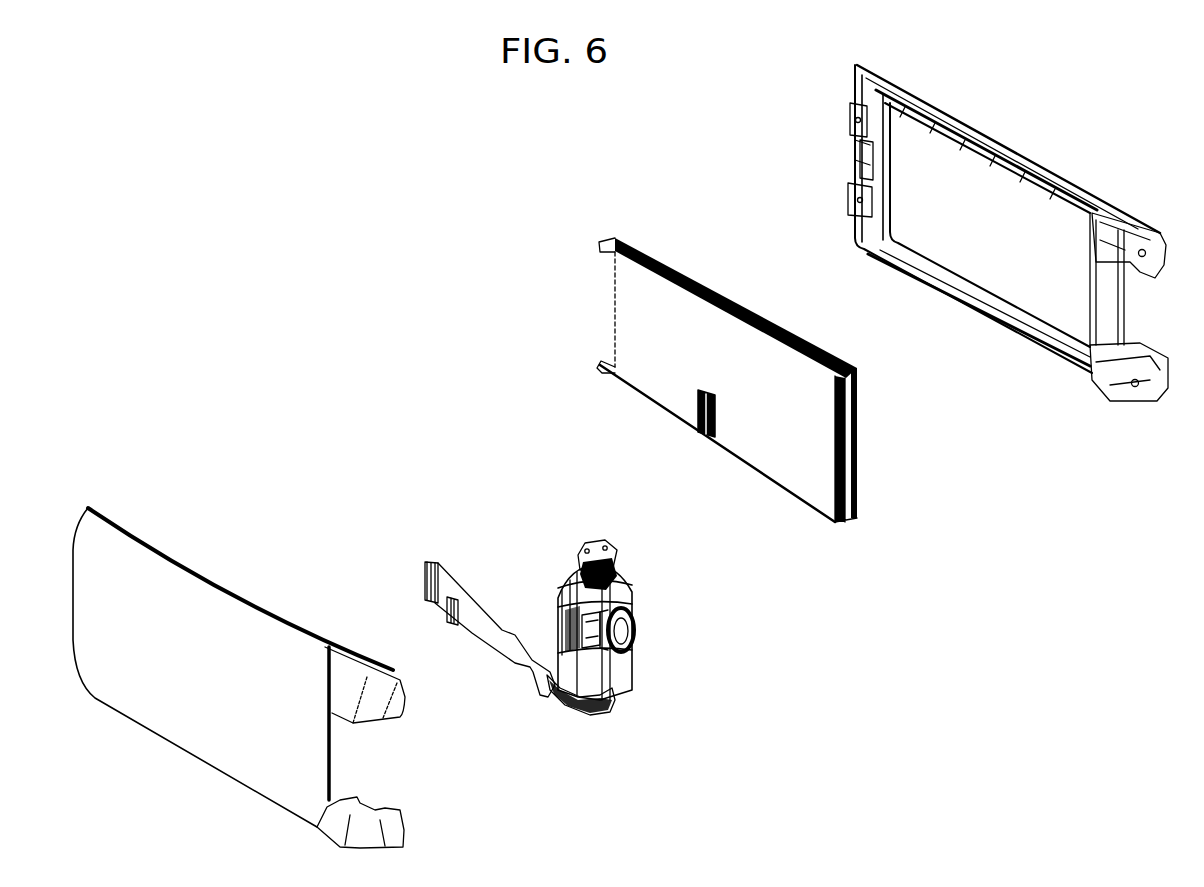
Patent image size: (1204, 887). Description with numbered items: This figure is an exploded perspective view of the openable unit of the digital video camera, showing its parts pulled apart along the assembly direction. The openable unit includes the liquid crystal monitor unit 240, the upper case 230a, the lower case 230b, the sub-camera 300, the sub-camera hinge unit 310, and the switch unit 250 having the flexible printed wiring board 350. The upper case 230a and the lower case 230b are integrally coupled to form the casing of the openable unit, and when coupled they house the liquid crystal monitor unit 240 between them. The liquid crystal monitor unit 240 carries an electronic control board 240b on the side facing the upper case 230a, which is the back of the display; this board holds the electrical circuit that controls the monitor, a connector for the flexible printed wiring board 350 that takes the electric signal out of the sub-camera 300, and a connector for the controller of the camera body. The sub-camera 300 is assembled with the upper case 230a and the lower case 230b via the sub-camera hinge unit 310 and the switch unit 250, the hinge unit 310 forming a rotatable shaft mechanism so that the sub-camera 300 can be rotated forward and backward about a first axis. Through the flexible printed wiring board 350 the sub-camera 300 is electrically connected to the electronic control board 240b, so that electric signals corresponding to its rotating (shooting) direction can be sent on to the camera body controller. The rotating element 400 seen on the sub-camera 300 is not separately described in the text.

The upper case 230a is at (257, 603).
The lower case 230b is at (1070, 363).
The liquid crystal monitor unit 240 is at (856, 450).
The electronic control board 240b is at (775, 443).
The switch unit 250 is at (613, 707).
The sub-camera 300 is at (623, 667).
The sub-camera hinge unit 310 is at (615, 548).
The flexible printed wiring board 350 is at (450, 587).
The coupler 400 is at (634, 627).